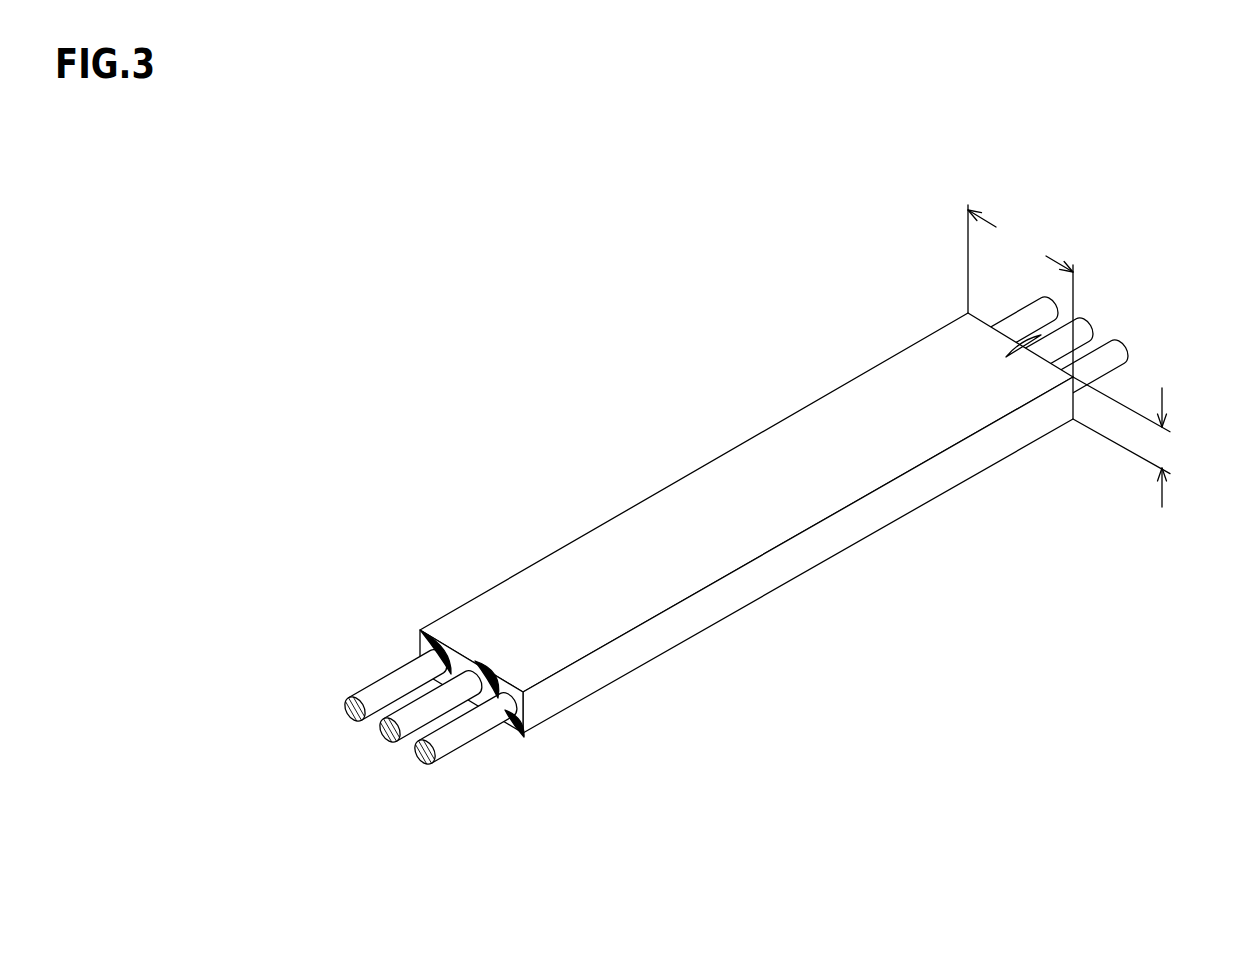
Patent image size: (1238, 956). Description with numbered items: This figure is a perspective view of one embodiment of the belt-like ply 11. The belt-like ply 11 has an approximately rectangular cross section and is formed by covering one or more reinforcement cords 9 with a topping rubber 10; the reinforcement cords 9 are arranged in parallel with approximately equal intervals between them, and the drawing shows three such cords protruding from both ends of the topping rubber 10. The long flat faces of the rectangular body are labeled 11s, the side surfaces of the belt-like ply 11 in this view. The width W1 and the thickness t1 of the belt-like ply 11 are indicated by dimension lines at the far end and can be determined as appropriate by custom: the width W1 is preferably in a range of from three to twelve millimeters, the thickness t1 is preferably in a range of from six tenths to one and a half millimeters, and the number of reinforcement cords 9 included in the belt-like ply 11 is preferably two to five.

The reinforcement cord 9 is at (774, 515).
The topping rubber 10 is at (671, 580).
The belt-like ply 11 is at (695, 572).
The side surface of flat cable 11s is at (638, 502).
The width W1 is at (1020, 291).
The thickness t1 is at (1124, 442).